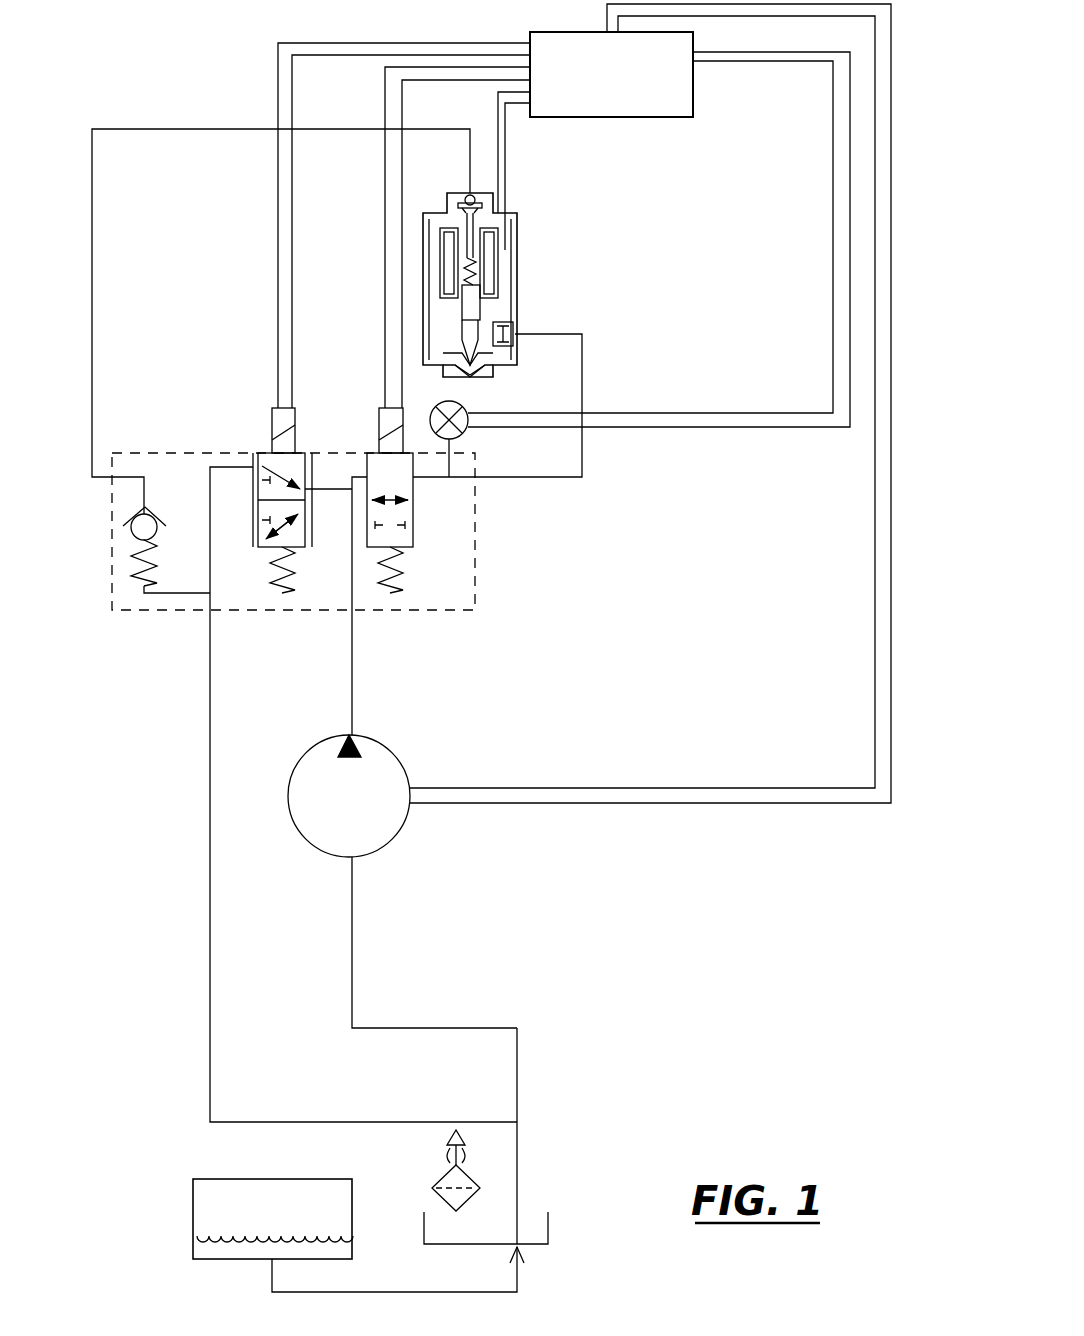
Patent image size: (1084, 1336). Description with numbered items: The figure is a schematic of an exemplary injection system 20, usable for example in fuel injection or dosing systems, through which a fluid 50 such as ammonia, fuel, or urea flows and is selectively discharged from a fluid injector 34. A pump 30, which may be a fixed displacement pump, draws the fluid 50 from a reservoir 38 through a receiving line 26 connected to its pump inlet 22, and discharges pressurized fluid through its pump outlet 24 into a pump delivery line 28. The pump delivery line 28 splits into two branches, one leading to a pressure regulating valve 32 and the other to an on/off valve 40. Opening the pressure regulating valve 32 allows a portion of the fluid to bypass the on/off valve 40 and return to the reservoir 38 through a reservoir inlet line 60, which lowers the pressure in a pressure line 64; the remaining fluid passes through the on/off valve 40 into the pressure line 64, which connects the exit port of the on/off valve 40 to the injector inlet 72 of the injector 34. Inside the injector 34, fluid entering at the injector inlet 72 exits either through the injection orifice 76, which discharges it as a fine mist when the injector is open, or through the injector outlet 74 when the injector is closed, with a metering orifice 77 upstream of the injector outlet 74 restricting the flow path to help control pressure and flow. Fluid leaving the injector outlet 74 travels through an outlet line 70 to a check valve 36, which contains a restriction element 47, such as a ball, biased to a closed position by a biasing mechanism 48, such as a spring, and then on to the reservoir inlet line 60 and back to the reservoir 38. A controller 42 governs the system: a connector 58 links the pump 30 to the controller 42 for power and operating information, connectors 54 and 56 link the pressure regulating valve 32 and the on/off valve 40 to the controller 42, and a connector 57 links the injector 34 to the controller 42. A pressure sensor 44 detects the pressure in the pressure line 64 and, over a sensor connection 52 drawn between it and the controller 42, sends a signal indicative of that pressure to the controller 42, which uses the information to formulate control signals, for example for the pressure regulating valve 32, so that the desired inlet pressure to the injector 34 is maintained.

The injection system 20 is at (705, 645).
The pump inlet 22 is at (352, 858).
The pump outlet 24 is at (350, 737).
The receiving line 26 is at (520, 1050).
The pump delivery line 28 is at (356, 640).
The pump 30 is at (397, 781).
The pressure regulating valve 32 is at (262, 540).
The fluid injector 34 is at (508, 243).
The check valve 36 is at (153, 534).
The reservoir 38 is at (304, 1219).
The on/off valve 40 is at (367, 540).
The controller 42 is at (697, 92).
The pressure sensor 44 is at (465, 440).
The restriction element 47 is at (148, 505).
The biasing mechanism 48 is at (157, 557).
The fluid 50 is at (333, 1248).
The sensor signal line 52 is at (830, 360).
The connector 54 is at (297, 182).
The connector 56 is at (383, 96).
The connector 57 is at (508, 142).
The connector 58 is at (888, 500).
The reservoir inlet line 60 is at (210, 750).
The pressure line 64 is at (585, 368).
The outlet line 70 is at (95, 265).
The injector inlet 72 is at (518, 330).
The injector outlet 74 is at (462, 188).
The injection orifice 76 is at (472, 372).
The metering orifice 77 is at (471, 195).